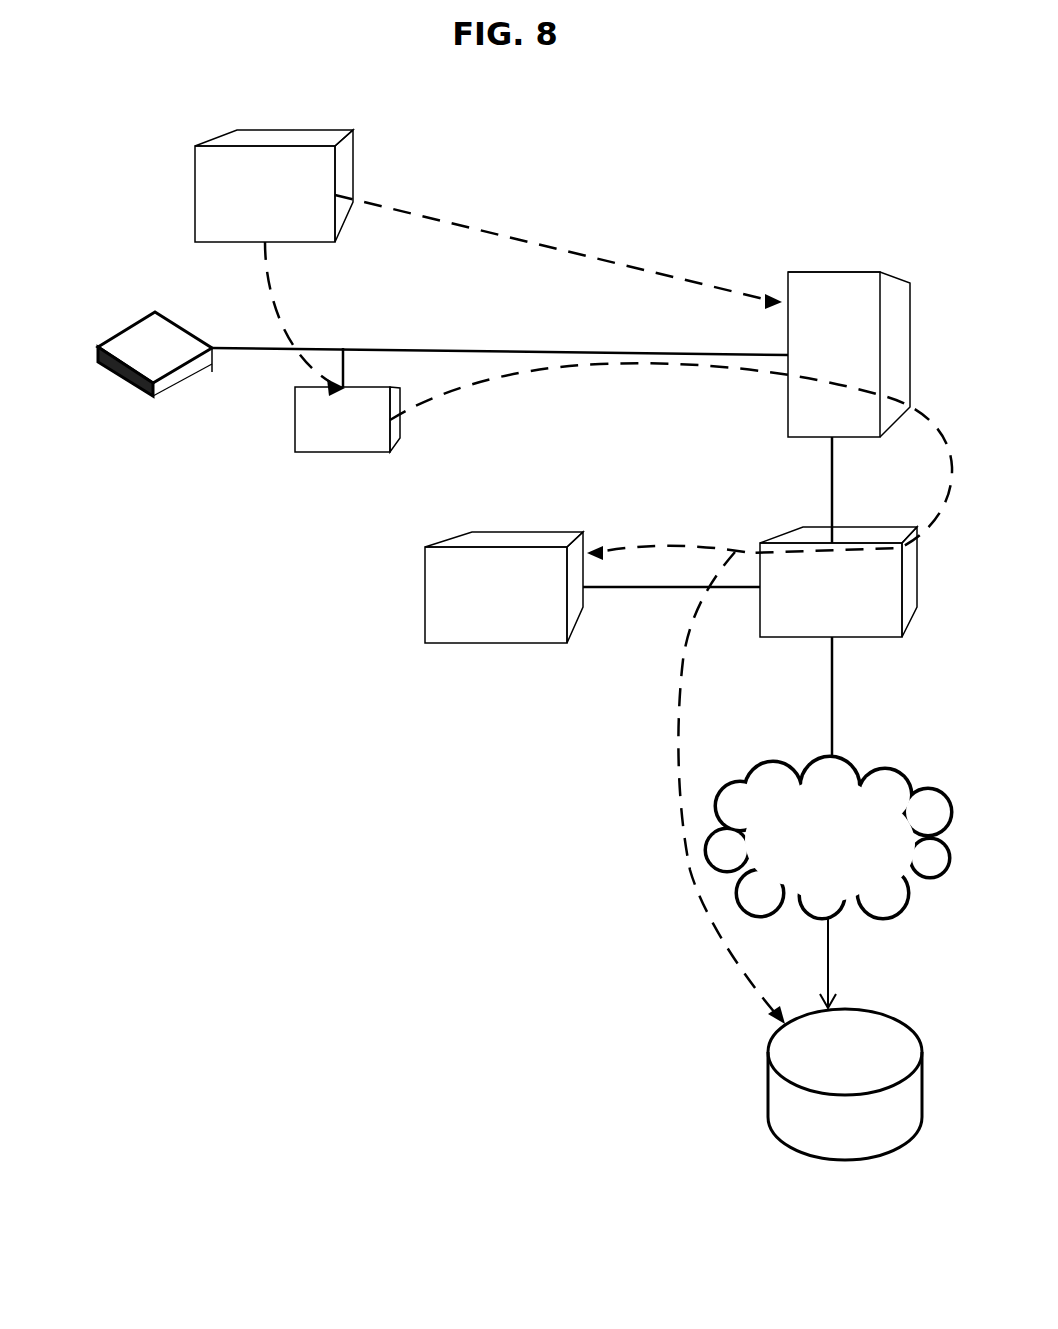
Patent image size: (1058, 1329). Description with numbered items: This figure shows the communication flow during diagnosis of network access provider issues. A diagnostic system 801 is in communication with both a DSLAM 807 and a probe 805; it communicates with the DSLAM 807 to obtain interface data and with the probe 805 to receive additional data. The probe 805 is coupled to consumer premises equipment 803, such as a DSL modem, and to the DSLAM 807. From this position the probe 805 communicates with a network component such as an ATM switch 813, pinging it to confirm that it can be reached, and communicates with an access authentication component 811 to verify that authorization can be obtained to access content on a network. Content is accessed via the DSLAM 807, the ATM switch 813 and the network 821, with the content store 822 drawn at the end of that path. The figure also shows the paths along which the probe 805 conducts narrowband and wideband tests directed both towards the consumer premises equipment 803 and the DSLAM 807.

The diagnostic system 801 is at (248, 227).
The consumer premises equipment 803 is at (128, 328).
The probe 805 is at (340, 452).
The DSLAM 807 is at (817, 419).
The access authentication component 811 is at (474, 629).
The ATM switch 813 is at (814, 629).
The network 821 is at (811, 881).
The content server 822 is at (828, 1146).